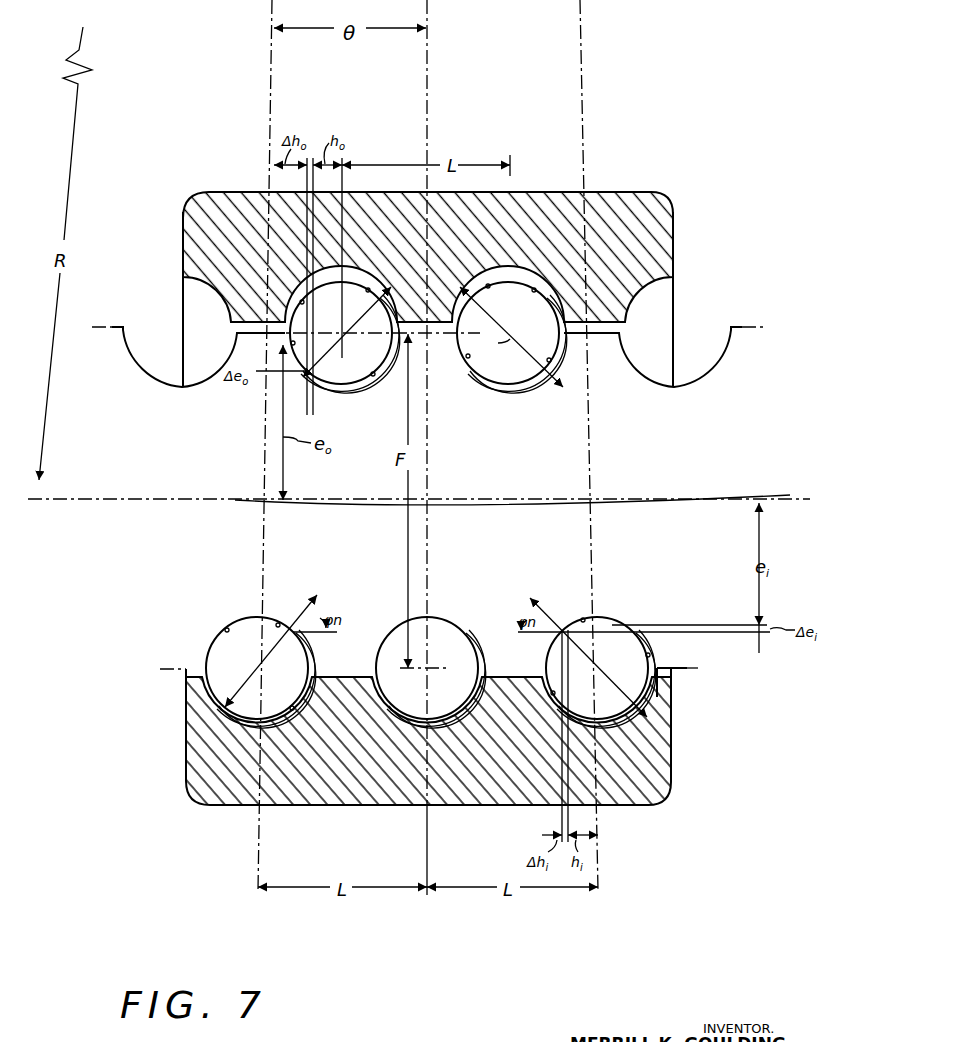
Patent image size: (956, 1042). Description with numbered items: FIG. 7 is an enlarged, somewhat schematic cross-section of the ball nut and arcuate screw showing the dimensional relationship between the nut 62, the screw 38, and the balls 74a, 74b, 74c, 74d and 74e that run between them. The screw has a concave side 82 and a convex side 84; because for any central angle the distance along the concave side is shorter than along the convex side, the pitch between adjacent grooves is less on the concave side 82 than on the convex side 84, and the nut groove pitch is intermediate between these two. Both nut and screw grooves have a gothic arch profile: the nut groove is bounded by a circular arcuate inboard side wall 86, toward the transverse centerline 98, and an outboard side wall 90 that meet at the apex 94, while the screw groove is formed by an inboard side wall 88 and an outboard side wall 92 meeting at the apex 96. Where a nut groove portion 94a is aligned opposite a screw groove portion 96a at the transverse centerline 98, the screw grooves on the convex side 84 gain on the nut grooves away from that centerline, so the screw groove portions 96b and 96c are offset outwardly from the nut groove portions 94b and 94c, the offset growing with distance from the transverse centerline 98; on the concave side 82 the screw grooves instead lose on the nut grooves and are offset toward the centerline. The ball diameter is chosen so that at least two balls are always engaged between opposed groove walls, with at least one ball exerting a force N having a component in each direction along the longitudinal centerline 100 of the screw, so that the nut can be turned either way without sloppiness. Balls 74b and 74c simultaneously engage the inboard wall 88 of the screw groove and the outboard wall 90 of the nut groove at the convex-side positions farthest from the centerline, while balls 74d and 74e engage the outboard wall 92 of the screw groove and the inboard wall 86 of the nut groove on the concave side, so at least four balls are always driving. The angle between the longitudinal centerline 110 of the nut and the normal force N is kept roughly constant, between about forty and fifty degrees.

The ball groove of adjacent raceway 38 is at (741, 327).
The outer race 62 is at (620, 192).
The ball 74a is at (450, 633).
The ball 74b is at (217, 698).
The ball 74c is at (657, 677).
The ball 74d is at (352, 319).
The ball 74e is at (532, 319).
The concave side of the screw 82 is at (118, 326).
The convex side of the screw 84 is at (170, 676).
The inboard side wall of nut groove 86 is at (368, 289).
The inboard side wall of screw groove 88 is at (373, 375).
The outboard side wall of nut groove 90 is at (300, 303).
The outboard side wall of screw groove 92 is at (293, 343).
The apex of nut groove 94 is at (342, 277).
The portion of nut groove 94a is at (430, 724).
The portion of nut groove 94b is at (258, 723).
The portion of nut groove 94c is at (600, 723).
The apex of screw groove 96 is at (338, 389).
The portion of screw groove 96a is at (428, 612).
The portion of screw groove 96b is at (255, 616).
The portion of screw groove 96c is at (598, 613).
The transverse centerline 98 is at (429, 896).
The longitudinal centerline of the screw 100 is at (50, 493).
The longitudinal centerline of the nut 110 is at (83, 503).